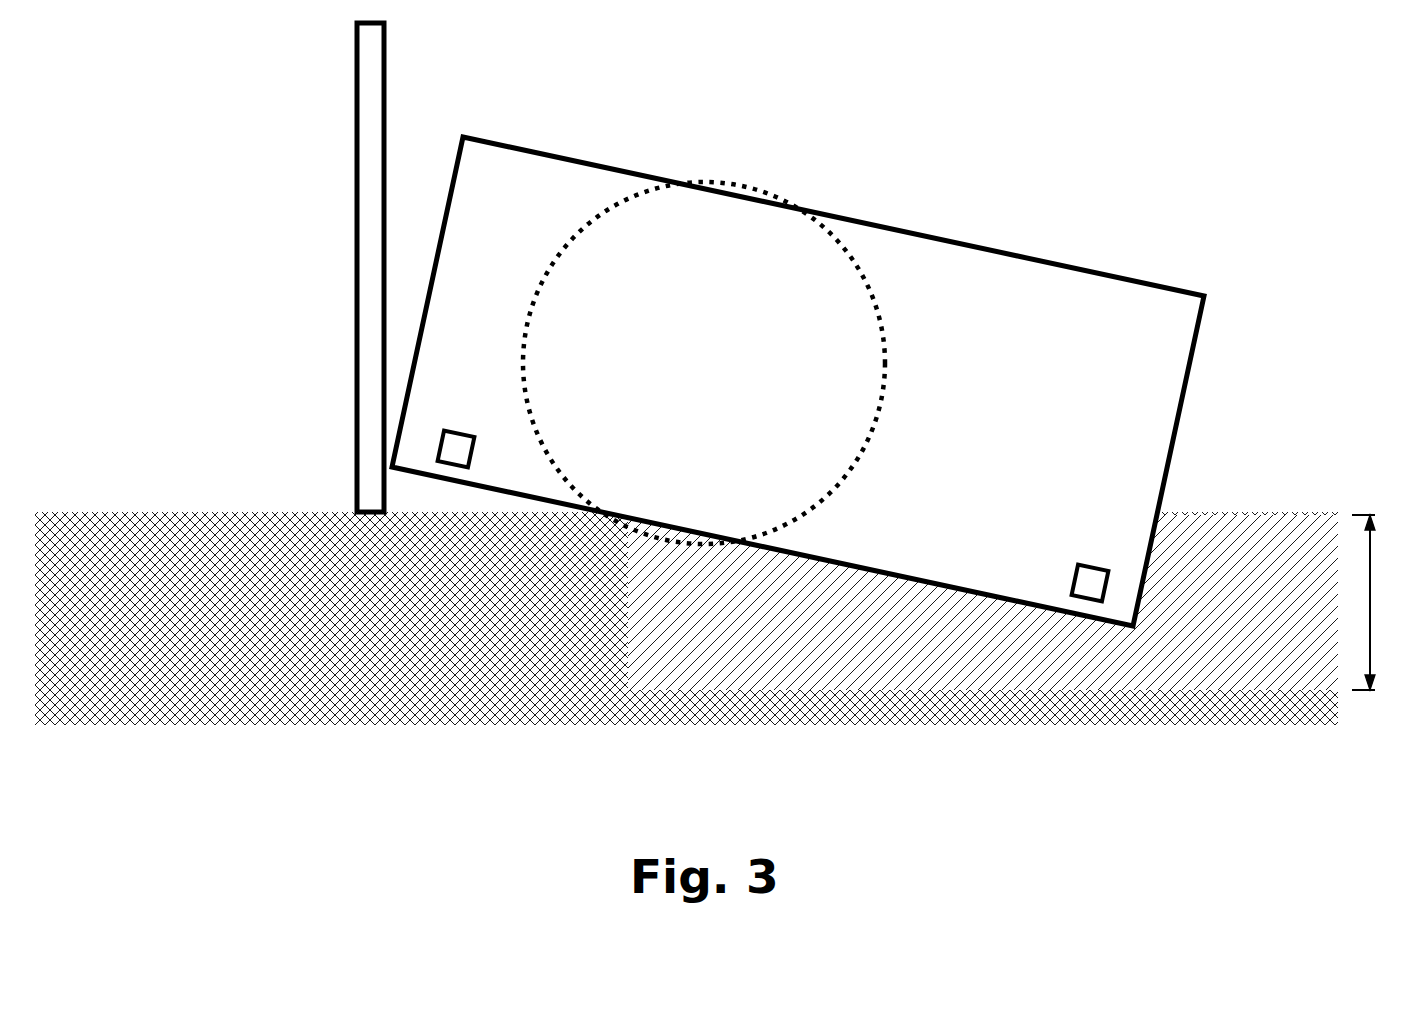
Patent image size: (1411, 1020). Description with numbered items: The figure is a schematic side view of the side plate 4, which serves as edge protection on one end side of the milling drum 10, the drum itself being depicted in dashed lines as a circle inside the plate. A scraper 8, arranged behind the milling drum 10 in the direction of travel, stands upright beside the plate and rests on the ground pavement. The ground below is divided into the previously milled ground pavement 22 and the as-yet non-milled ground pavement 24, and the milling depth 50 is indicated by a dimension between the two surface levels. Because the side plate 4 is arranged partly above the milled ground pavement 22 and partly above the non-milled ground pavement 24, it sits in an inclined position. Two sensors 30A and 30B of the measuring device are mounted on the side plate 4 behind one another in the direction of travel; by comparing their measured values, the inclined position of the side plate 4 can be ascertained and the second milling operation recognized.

The side plate 4 is at (1123, 321).
The scraper 8 is at (370, 175).
The milling drum 10 is at (873, 285).
The milled ground pavement 22 is at (1245, 692).
The non-milled ground pavement 24 is at (242, 512).
The sensor 30A is at (455, 450).
The sensor 30B is at (1090, 582).
The milling depth 50 is at (1379, 602).